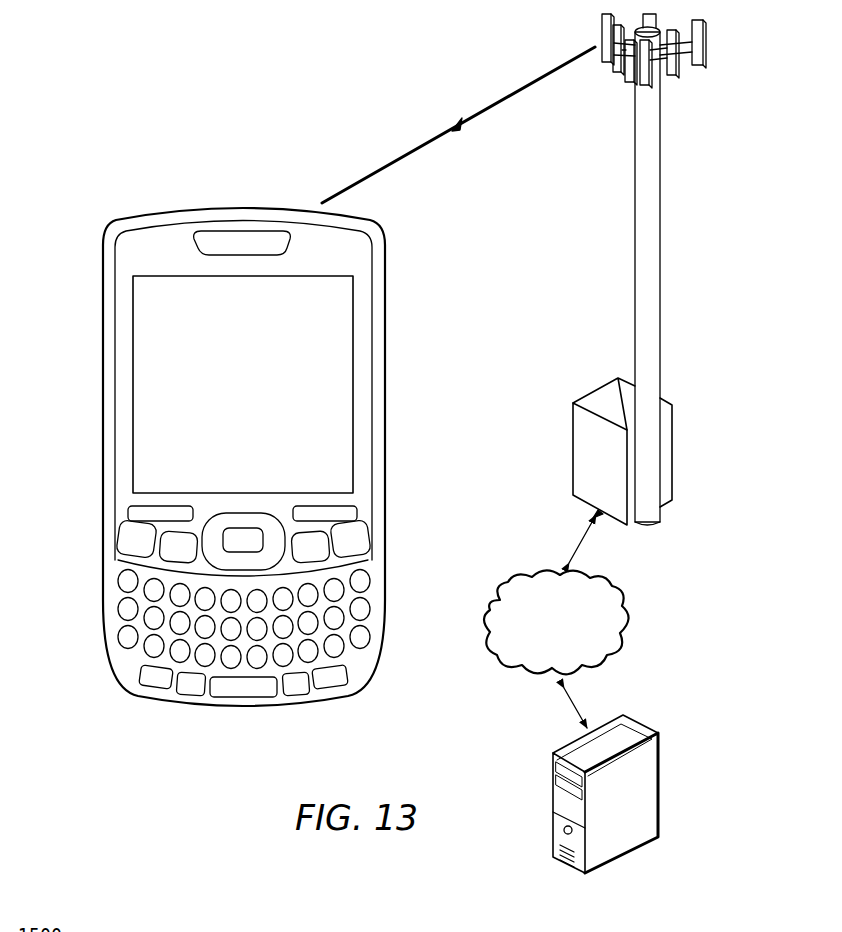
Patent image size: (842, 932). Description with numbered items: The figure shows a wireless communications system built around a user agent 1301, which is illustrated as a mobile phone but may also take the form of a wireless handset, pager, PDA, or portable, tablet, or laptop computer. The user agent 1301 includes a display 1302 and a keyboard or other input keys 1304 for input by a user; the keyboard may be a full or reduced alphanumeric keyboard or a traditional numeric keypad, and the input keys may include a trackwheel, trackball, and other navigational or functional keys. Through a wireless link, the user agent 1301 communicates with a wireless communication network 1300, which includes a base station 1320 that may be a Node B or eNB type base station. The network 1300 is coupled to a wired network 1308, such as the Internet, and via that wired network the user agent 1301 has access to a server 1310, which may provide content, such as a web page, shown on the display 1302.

The wireless communication network 1300 is at (662, 273).
The user agent 1301 is at (200, 709).
The display 1302 is at (256, 458).
The keyboard 1304 is at (88, 485).
The wired network 1308 is at (627, 627).
The server 1310 is at (658, 782).
The base station 1320 is at (573, 447).